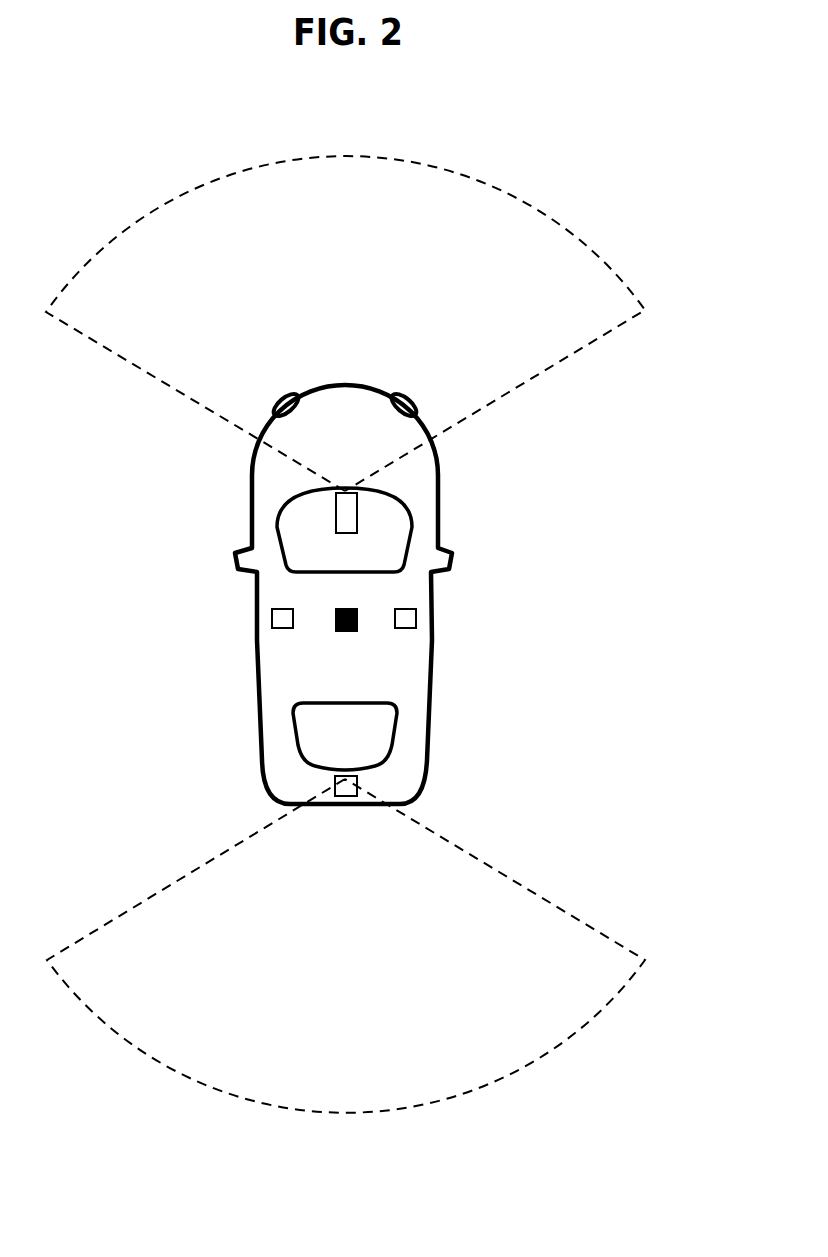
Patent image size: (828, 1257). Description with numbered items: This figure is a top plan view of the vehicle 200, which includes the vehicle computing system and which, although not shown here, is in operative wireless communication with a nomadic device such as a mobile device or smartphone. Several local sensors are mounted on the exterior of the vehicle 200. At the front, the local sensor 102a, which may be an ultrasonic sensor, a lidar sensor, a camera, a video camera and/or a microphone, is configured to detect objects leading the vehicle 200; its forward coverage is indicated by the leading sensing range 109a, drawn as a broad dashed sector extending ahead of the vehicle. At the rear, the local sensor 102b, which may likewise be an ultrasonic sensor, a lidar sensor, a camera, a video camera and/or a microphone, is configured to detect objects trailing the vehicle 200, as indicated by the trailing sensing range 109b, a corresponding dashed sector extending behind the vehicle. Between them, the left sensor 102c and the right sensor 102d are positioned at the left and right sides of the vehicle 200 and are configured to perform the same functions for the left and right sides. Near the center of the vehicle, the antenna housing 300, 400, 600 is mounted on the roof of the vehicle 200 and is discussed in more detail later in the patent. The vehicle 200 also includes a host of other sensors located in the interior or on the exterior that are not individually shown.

The vehicle 200 is at (460, 722).
The local sensor 102a is at (340, 517).
The local sensor 102b is at (346, 796).
The left sensor 102c is at (281, 614).
The right sensor 102d is at (408, 614).
The leading sensing range 109a is at (620, 332).
The trailing sensing range 109b is at (620, 940).
The antenna housing 300 is at (202, 652).
The antenna housing 400 is at (202, 652).
The antenna housing 600 is at (345, 655).